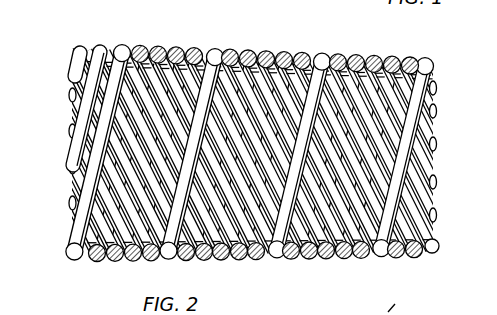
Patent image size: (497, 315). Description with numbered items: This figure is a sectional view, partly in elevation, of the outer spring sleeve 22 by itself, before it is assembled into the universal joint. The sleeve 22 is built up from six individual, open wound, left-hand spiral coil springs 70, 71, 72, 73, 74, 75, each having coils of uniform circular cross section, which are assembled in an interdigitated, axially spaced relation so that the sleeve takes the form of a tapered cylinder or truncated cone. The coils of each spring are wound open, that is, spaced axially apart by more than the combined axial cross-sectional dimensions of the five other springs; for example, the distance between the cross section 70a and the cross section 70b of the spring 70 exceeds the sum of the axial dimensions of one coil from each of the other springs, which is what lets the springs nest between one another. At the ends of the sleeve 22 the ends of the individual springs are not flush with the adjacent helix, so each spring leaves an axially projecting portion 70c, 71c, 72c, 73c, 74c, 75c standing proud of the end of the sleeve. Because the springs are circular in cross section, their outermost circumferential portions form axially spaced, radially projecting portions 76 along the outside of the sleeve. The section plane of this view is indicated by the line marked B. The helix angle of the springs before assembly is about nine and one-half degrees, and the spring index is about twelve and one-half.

The outer spring sleeve 22 is at (246, 38).
The spiral coil spring 70 is at (426, 58).
The cross section 70a is at (386, 254).
The cross section 70b is at (275, 258).
The axially projecting portion 70c is at (436, 91).
The spiral coil spring 71 is at (408, 60).
The axially projecting portion 71c is at (437, 140).
The spiral coil spring 72 is at (391, 59).
The axially projecting portion 72c is at (437, 182).
The spiral coil spring 73 is at (368, 58).
The axially projecting portion 73c is at (439, 245).
The spiral coil spring 74 is at (350, 57).
The axially projecting portion 74c is at (437, 209).
The spiral coil spring 75 is at (336, 48).
The axially projecting portion 75c is at (437, 112).
The radially projecting portion 76 is at (177, 50).
The section line B is at (401, 306).